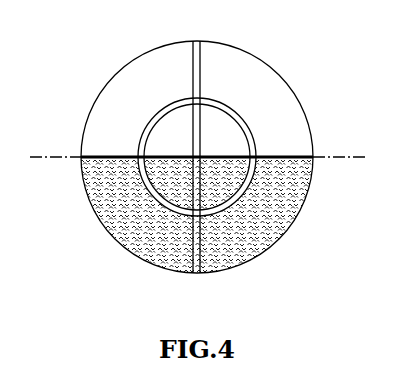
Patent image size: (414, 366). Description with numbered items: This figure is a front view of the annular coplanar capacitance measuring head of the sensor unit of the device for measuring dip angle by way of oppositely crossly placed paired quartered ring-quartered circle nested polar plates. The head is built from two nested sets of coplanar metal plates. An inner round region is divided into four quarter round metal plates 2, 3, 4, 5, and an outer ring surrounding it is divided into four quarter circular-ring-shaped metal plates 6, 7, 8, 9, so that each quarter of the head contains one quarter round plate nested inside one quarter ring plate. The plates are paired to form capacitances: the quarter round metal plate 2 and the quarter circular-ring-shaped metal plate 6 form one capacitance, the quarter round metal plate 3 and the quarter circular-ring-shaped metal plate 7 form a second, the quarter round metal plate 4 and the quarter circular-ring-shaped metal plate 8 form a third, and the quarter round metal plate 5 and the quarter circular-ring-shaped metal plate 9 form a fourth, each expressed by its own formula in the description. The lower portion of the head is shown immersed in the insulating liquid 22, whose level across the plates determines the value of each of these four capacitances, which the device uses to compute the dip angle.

The quarter round metal plate 2 is at (222, 135).
The quarter round metal plate 3 is at (175, 138).
The quarter round metal plate 4 is at (178, 193).
The quarter round metal plate 5 is at (224, 186).
The quarter circular-ring-shaped metal plate 6 is at (280, 117).
The quarter circular-ring-shaped metal plate 7 is at (117, 120).
The quarter circular-ring-shaped metal plate 8 is at (133, 217).
The quarter circular-ring-shaped metal plate 9 is at (277, 200).
The insulating liquid 22 is at (137, 182).